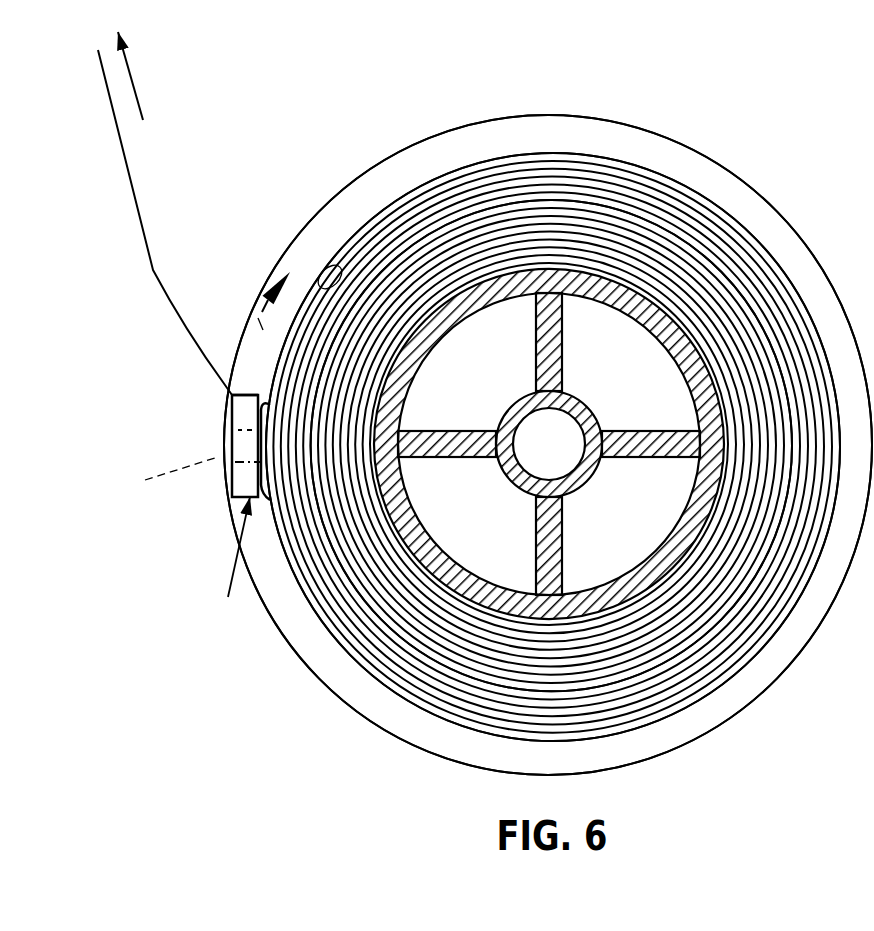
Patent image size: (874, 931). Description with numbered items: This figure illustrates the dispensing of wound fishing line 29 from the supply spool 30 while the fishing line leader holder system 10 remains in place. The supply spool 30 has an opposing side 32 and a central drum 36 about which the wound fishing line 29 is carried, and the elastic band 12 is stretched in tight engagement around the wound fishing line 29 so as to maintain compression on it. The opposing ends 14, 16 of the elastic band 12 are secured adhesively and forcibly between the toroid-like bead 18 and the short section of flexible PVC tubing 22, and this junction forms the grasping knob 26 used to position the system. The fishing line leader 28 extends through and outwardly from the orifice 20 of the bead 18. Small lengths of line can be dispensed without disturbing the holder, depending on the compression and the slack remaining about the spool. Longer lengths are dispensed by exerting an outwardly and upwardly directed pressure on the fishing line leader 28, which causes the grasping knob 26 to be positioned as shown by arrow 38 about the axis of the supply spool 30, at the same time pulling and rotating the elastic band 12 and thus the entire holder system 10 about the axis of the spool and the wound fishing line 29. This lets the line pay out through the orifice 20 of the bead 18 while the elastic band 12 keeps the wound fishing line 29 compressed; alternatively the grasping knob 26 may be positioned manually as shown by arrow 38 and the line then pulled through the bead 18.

The fishing line leader holder system 10 is at (412, 188).
The elastic band 12 is at (340, 238).
The opposing end 14 is at (228, 397).
The opposing end 16 is at (232, 490).
The toroid-like bead 18 is at (232, 450).
The orifice 20 is at (167, 474).
The PVC tubing 22 is at (240, 397).
The grasping knob 26 is at (233, 558).
The fishing line leader 28 is at (122, 147).
The wound fishing line 29 is at (405, 245).
The supply spool 30 is at (688, 143).
The opposing side 32 is at (717, 175).
The central drum 36 is at (413, 355).
The arrow 38 is at (263, 330).